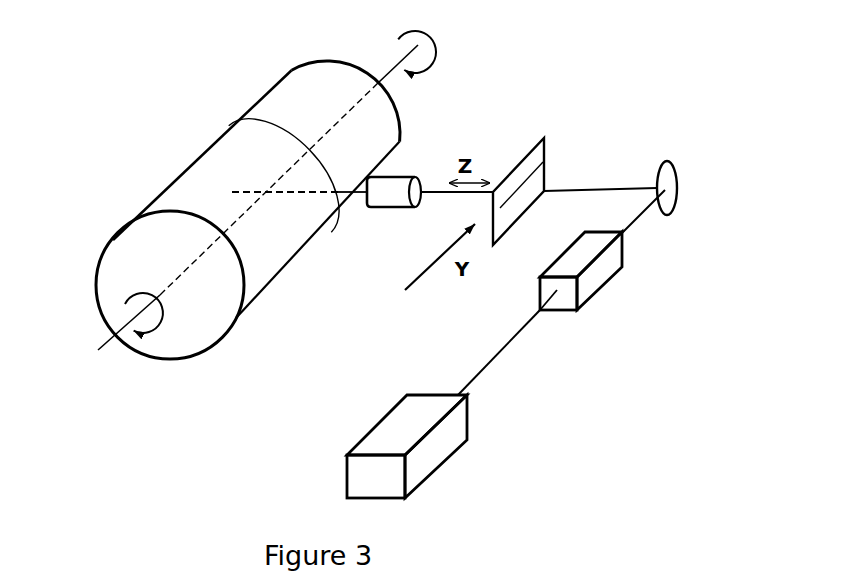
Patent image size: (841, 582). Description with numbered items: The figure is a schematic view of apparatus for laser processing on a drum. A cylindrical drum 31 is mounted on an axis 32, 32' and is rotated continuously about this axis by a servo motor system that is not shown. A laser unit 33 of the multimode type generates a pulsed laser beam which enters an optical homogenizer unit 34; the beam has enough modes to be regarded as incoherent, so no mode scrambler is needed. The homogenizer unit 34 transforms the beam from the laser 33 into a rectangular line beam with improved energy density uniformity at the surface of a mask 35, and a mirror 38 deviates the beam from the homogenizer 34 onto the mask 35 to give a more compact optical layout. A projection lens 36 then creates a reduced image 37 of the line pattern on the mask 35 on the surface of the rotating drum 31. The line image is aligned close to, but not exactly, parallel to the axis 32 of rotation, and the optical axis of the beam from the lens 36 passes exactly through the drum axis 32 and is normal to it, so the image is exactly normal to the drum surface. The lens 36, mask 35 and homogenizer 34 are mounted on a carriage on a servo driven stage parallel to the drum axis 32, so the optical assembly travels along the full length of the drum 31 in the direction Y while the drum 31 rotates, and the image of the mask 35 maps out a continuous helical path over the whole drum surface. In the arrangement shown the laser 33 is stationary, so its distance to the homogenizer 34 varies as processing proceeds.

The cylindrical drum 31 is at (222, 122).
The axis 32 is at (130, 376).
The axis 32' is at (366, 41).
The laser unit 33 is at (344, 458).
The optical homogenizer unit 34 is at (567, 319).
The mask 35 is at (548, 162).
The projection lens 36 is at (347, 186).
The reduced image 37 is at (413, 170).
The mirror 38 is at (662, 223).